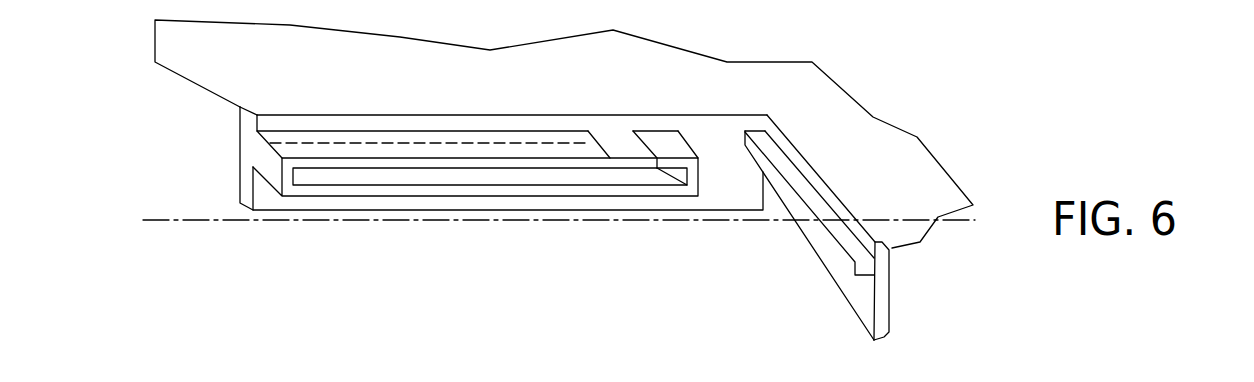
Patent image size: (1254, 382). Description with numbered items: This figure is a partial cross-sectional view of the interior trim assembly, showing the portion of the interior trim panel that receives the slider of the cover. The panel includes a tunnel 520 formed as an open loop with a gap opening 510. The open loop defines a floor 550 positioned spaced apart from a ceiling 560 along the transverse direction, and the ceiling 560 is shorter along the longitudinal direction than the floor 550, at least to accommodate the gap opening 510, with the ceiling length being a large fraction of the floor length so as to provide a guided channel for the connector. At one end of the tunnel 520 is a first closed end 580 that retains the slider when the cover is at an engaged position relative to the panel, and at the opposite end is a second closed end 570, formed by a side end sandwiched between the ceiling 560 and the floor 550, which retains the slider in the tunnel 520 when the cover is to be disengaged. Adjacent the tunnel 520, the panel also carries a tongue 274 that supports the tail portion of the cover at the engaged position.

The closed end 580 is at (701, 147).
The second closed end 570 is at (293, 149).
The ceiling 560 is at (410, 151).
The floor 550 is at (398, 195).
The tunnel 520 is at (515, 180).
The gap opening 510 is at (621, 149).
The tongue 274 is at (836, 237).